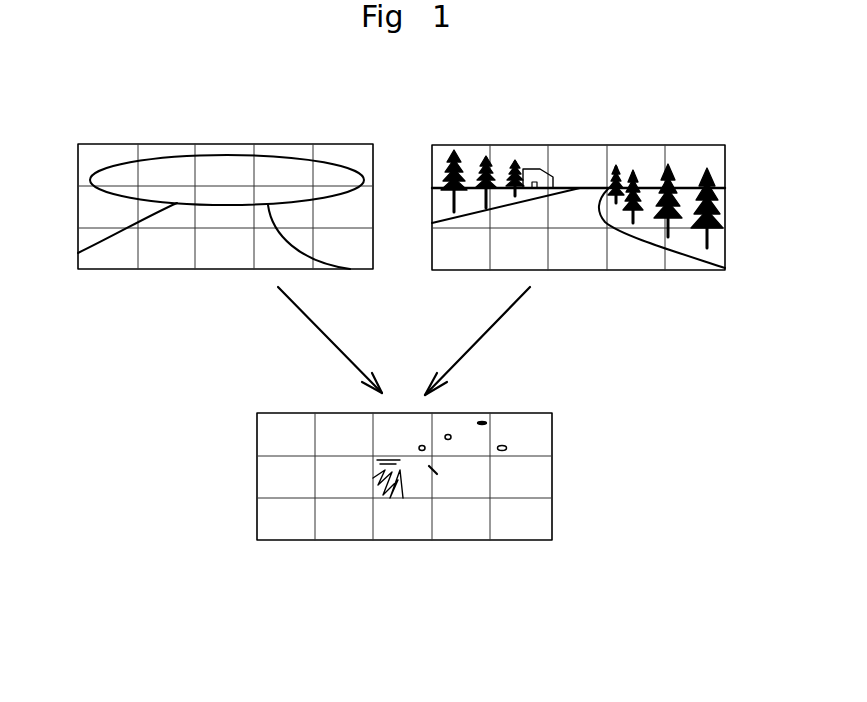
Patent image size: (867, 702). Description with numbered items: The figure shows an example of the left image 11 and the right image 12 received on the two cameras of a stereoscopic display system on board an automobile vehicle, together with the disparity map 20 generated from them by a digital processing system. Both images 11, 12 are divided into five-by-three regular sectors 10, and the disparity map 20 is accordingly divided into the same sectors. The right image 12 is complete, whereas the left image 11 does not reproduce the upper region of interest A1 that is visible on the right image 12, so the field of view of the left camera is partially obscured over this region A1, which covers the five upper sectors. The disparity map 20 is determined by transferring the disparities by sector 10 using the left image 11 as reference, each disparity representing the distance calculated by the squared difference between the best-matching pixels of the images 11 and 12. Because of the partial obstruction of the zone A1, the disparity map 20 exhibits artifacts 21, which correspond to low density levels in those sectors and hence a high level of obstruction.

The sector 10 is at (348, 158).
The left image 11 is at (215, 199).
The right image 12 is at (655, 269).
The disparity map 20 is at (348, 539).
The artifacts 21 is at (397, 490).
The upper region of interest A1 is at (227, 172).